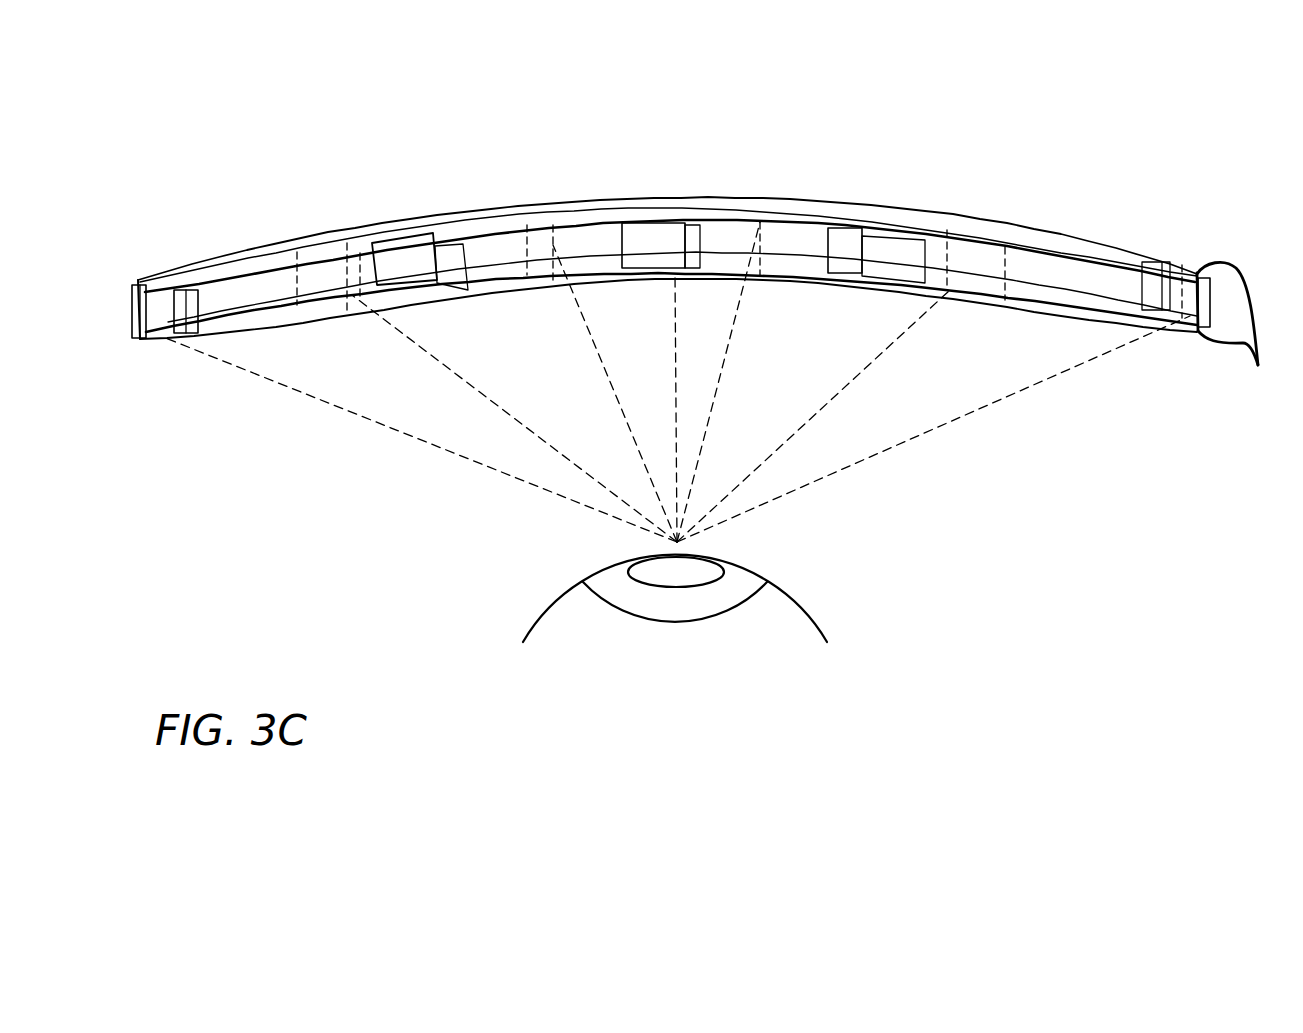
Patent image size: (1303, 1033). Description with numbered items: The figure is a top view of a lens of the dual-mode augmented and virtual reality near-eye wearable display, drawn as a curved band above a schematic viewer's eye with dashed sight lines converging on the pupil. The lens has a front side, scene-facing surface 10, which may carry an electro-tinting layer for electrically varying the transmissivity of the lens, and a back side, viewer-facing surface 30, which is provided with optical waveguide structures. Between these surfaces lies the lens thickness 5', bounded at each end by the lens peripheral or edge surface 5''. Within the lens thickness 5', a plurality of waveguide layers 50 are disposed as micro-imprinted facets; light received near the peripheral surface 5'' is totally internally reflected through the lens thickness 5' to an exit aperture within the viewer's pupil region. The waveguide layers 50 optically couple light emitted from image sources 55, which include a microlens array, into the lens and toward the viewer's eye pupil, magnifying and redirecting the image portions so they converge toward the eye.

The front side scene-facing surface 10 is at (774, 200).
The lens thickness 5' is at (1177, 283).
The lens peripheral surface 5'' is at (192, 261).
The waveguide layer 50 is at (305, 316).
The image source 55 is at (394, 280).
The back side viewer-facing surface 30 is at (1025, 302).